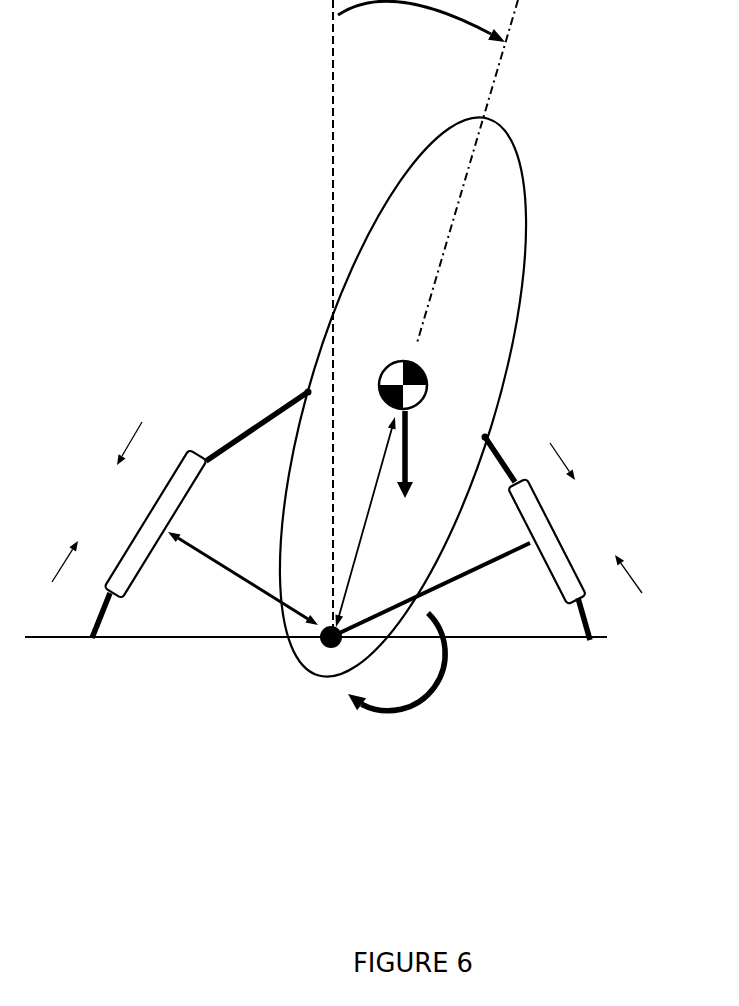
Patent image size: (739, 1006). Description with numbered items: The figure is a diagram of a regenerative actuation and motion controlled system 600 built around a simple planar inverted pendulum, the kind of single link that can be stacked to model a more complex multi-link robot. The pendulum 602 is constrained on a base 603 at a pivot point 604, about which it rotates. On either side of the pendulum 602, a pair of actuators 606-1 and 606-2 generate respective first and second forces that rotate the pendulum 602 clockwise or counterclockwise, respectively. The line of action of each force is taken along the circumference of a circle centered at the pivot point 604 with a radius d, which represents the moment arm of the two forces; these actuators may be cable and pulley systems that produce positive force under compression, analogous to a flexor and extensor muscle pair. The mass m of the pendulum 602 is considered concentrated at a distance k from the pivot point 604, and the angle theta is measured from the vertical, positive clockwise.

The regenerative actuation and motion controlled system 600 is at (127, 96).
The pendulum 602 is at (527, 209).
The base 603 is at (510, 639).
The pivot point 604 is at (326, 650).
The actuator 606-1 is at (170, 467).
The actuator 606-2 is at (591, 593).